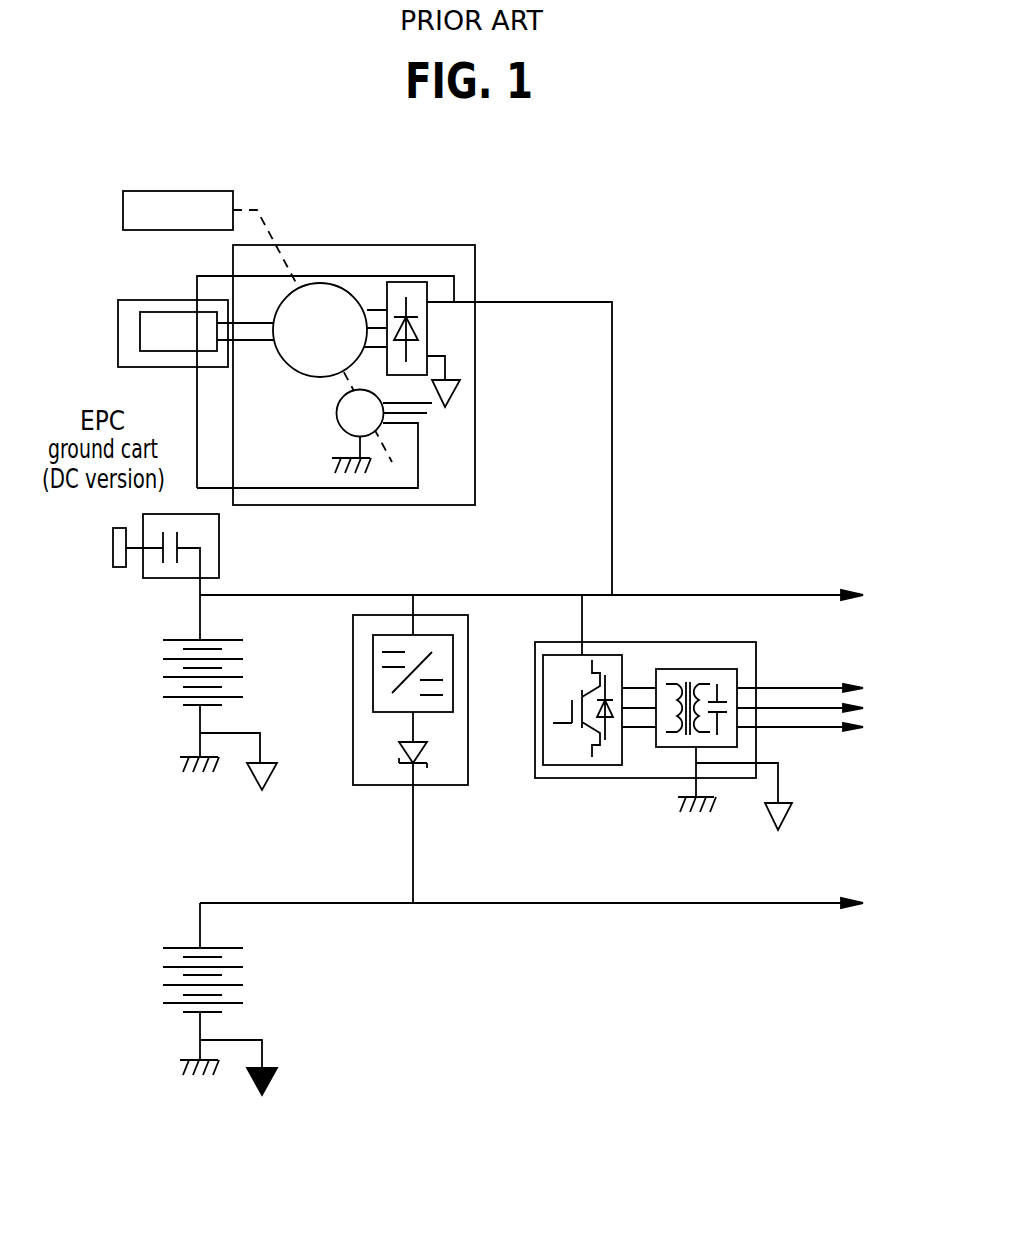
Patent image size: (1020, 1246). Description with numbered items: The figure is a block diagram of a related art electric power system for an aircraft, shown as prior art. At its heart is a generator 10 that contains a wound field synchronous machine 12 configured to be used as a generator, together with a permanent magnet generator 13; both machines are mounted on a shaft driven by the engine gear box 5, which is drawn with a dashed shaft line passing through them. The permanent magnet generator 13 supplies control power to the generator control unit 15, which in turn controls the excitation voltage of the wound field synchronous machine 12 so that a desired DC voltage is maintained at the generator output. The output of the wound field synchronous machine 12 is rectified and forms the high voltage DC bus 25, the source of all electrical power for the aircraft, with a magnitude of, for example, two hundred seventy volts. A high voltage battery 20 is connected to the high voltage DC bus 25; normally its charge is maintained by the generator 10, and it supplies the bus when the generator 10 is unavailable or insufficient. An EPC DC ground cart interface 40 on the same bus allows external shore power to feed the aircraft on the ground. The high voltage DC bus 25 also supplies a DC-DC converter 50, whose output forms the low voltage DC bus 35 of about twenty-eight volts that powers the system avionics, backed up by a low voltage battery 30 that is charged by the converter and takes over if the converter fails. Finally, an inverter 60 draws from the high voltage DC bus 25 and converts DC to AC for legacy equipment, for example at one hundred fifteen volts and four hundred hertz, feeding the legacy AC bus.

The engine gear box 5 is at (185, 191).
The generator 10 is at (477, 266).
The wound field synchronous machine 12 is at (318, 283).
The permanent magnet generator 13 is at (336, 405).
The generator control unit 15 is at (150, 300).
The high voltage battery 20 is at (172, 712).
The high voltage DC bus 25 is at (507, 595).
The low voltage battery 30 is at (170, 1018).
The low voltage DC bus 35 is at (512, 905).
The EPC DC ground cart interface 40 is at (155, 578).
The DC-DC converter 50 is at (435, 785).
The inverter 60 is at (760, 745).